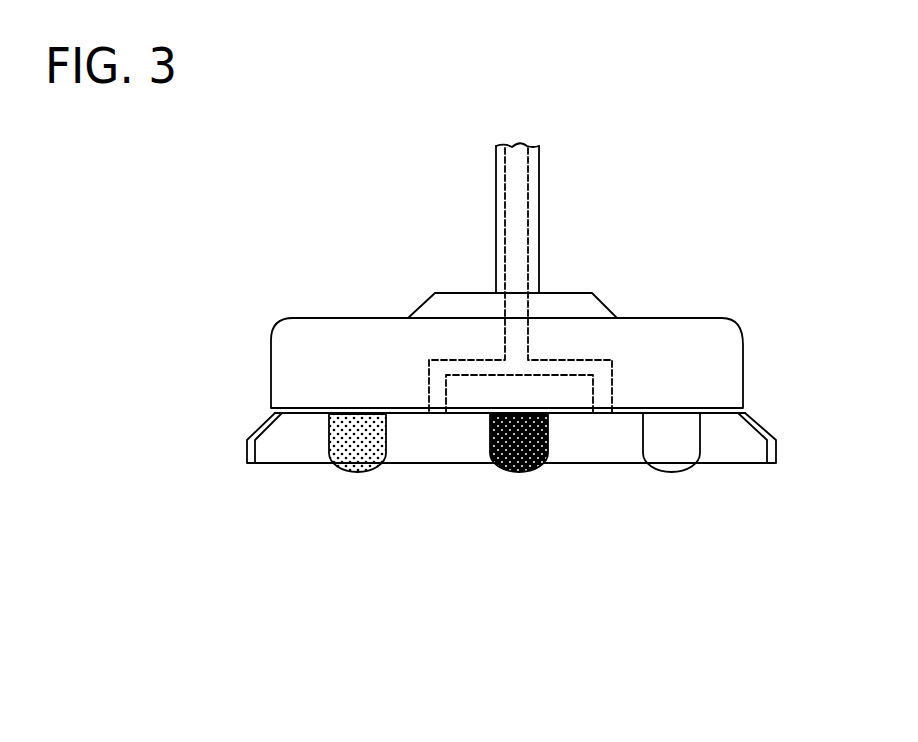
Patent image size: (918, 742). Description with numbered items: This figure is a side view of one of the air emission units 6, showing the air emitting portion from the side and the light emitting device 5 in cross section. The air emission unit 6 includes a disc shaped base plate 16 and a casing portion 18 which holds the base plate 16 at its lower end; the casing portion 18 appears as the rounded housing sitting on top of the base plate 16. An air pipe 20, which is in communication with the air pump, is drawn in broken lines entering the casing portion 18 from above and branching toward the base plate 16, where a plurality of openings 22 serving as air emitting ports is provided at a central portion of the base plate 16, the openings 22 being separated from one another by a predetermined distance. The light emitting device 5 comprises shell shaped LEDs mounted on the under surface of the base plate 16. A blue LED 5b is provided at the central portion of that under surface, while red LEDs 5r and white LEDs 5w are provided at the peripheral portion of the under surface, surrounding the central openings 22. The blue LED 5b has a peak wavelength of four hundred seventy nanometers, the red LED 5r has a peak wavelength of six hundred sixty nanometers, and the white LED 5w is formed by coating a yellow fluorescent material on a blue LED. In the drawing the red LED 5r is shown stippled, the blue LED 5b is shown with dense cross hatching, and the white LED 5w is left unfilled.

The air emission unit 6 is at (365, 284).
The casing portion 18 is at (293, 350).
The air pipe 20 is at (530, 345).
The opening (air emitting port) 22 is at (429, 420).
The base plate 16 is at (303, 416).
The light emitting device 5 is at (788, 622).
The red LED 5r is at (345, 465).
The blue LED 5b is at (523, 468).
The white LED 5w is at (687, 468).